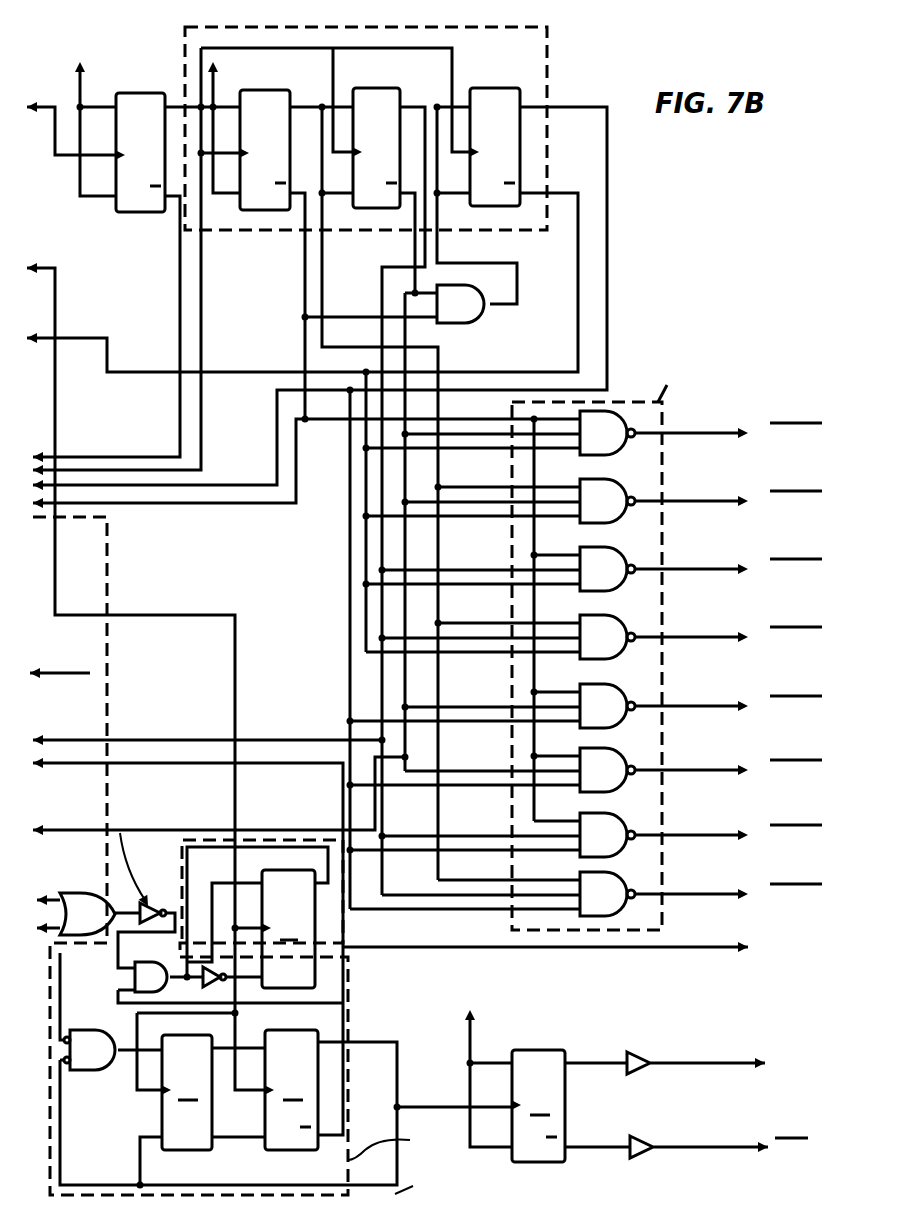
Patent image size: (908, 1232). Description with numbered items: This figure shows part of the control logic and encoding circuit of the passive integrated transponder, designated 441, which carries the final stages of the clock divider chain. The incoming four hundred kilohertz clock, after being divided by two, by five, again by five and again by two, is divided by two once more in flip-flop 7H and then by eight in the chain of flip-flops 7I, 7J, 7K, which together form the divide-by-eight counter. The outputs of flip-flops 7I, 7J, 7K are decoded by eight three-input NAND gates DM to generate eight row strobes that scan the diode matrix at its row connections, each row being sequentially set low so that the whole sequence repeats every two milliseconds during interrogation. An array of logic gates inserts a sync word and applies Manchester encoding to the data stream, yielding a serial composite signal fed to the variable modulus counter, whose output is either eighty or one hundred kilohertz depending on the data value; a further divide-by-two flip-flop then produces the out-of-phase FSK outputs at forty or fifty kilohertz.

The row decode and timing circuit 441 is at (670, 263).
The divide-by-two flip-flop 7H is at (130, 145).
The divide-by-eight counter flip-flop 7I is at (255, 145).
The divide-by-eight counter flip-flop 7J is at (366, 145).
The divide-by-eight counter flip-flop 7K is at (485, 145).